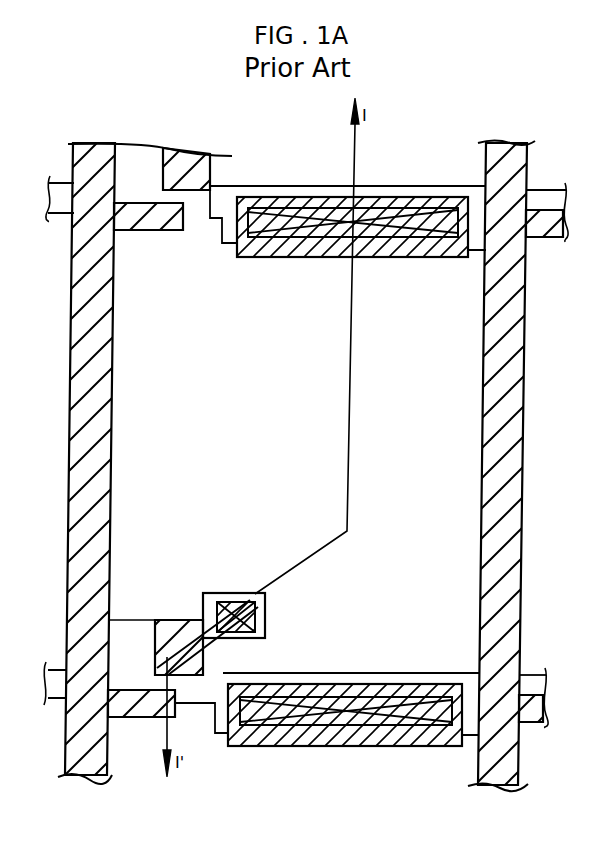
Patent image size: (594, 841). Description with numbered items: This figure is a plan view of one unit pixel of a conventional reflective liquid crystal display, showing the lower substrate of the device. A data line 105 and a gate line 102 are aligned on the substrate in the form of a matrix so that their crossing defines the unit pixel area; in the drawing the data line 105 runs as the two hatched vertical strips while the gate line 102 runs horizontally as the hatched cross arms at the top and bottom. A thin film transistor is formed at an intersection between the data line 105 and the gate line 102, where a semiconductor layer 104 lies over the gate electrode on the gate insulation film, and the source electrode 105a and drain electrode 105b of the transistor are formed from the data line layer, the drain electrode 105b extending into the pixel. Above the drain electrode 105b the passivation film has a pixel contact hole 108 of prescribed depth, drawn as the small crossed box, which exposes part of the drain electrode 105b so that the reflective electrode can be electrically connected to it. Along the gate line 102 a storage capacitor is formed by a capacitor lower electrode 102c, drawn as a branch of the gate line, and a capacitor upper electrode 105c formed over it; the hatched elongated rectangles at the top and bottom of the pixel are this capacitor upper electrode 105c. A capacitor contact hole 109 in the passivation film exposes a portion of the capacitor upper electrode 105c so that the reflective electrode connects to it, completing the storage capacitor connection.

The gate line 102 is at (56, 212).
The capacitor lower electrode 102c is at (229, 244).
The semiconductor layer 104 is at (132, 633).
The data line 105 is at (105, 405).
The source electrode 105a is at (137, 718).
The drain electrode 105b is at (203, 655).
The capacitor upper electrode 105c is at (403, 258).
The pixel contact hole 108 is at (265, 627).
The capacitor contact hole 109 is at (382, 672).